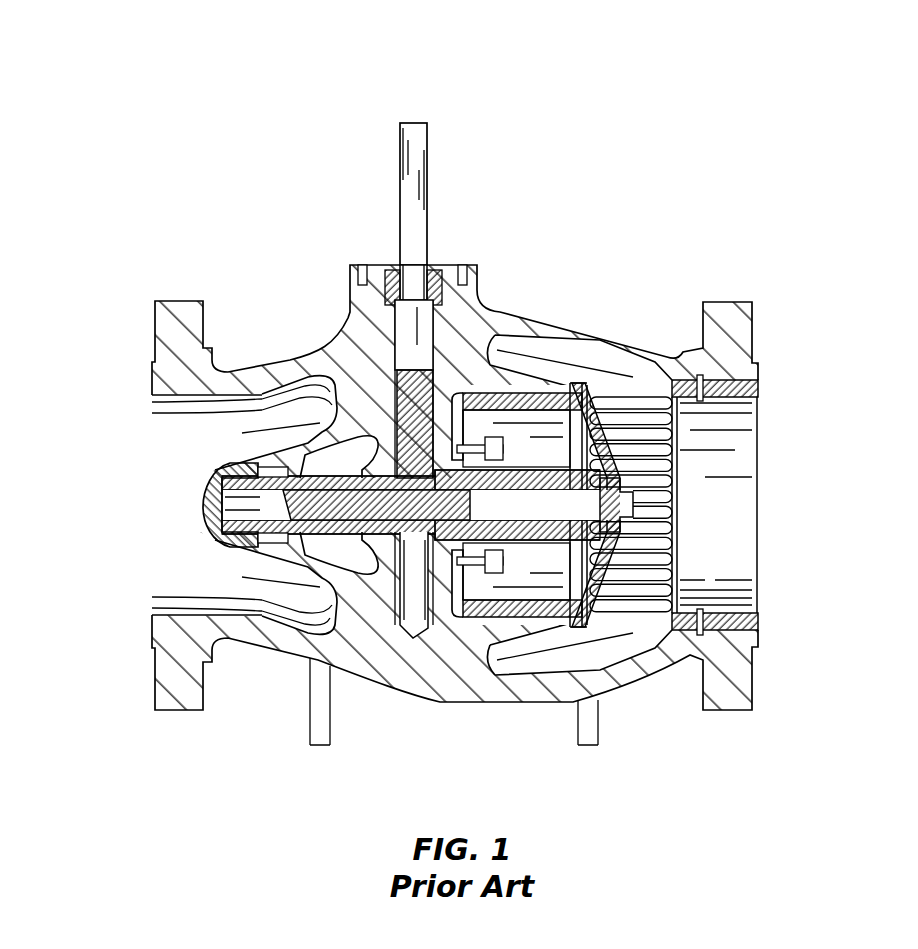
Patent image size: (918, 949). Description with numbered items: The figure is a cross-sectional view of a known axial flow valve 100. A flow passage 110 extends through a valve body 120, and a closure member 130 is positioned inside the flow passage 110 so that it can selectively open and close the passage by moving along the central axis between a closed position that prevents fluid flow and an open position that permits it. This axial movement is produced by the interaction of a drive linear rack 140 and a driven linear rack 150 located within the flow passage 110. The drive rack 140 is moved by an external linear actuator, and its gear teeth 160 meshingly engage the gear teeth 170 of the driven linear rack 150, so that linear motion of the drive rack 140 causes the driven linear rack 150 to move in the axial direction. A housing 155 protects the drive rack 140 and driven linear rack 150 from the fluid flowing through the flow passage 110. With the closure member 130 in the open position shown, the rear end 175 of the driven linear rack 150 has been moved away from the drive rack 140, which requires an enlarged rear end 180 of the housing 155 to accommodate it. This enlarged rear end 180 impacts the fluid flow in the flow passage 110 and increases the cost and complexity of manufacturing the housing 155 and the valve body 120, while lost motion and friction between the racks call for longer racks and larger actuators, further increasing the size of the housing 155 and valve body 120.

The axial flow valve 100 is at (606, 60).
The flow passage 110 is at (188, 563).
The valve body 120 is at (621, 337).
The closure member 130 is at (609, 574).
The drive linear rack 140 is at (446, 368).
The driven linear rack 150 is at (275, 512).
The housing 155 is at (318, 437).
The gear teeth of the drive rack 160 is at (320, 446).
The gear teeth of the driven linear rack 170 is at (324, 536).
The rear end of the driven linear rack 175 is at (268, 495).
The enlarged rear end of the housing 180 is at (222, 477).